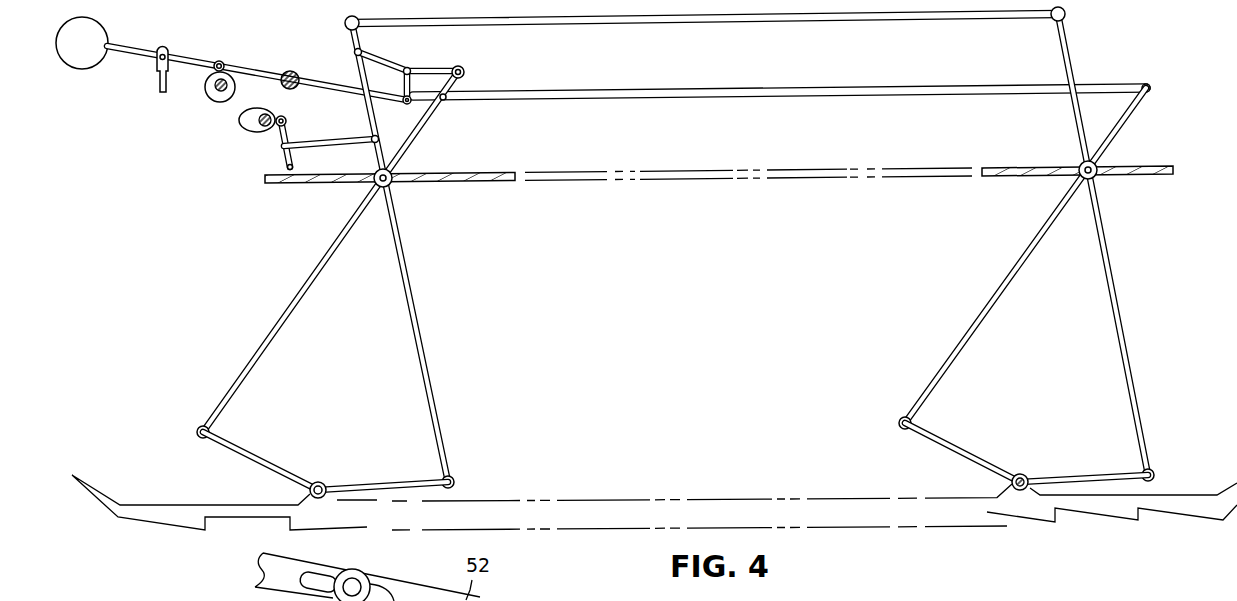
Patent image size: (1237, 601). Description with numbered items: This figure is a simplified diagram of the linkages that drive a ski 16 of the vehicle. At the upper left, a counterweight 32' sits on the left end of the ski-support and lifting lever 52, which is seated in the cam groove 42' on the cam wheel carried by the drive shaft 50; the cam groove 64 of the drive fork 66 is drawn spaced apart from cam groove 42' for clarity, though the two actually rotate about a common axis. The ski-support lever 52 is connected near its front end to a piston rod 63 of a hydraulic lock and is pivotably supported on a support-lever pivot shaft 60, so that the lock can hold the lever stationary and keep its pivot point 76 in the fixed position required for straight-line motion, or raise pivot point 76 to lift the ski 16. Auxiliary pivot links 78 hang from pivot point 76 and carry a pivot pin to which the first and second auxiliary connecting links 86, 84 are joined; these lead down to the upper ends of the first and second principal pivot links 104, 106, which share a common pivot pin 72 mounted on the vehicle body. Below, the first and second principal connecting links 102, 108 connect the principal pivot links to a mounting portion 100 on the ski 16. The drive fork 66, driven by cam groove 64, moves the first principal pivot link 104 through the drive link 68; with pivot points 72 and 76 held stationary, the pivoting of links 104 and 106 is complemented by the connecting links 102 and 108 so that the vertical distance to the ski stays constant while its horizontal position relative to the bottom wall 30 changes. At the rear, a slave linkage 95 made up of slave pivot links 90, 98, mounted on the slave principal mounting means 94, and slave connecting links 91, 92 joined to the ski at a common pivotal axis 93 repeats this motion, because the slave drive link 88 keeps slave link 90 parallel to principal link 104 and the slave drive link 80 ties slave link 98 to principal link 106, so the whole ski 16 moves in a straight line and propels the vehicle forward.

The ski 16 is at (172, 503).
The bottom wall 30 is at (495, 173).
The counterweight 32' is at (75, 62).
The cam groove 42' is at (169, 112).
The drive shaft 50 is at (213, 100).
The ski-support and lifting lever 52 is at (247, 68).
The support-lever pivot shaft 60 is at (291, 70).
The piston rod 63 is at (158, 86).
The cam groove 64 is at (245, 128).
The drive fork 66 is at (282, 152).
The drive link 68 is at (322, 141).
The pivot pin 72 is at (396, 188).
The pivot point 76 is at (403, 104).
The auxiliary pivot link 78 is at (404, 66).
The slave drive link 80 is at (650, 98).
The second auxiliary connecting link 84 is at (437, 66).
The first auxiliary connecting link 86 is at (366, 60).
The slave drive link 88 is at (620, 24).
The slave pivot link 90 is at (1107, 250).
The slave connecting link 91 is at (1069, 477).
The slave connecting link 92 is at (968, 453).
The common pivotal axis 93 is at (1024, 476).
The slave principal mounting means 94 is at (1097, 166).
The slave linkage 95 is at (1052, 412).
The slave pivot link 98 is at (1026, 251).
The mounting portion 100 is at (318, 480).
The first principal connecting link 102 is at (384, 483).
The first principal pivot link 104 is at (413, 296).
The second principal pivot link 106 is at (303, 292).
The second principal connecting link 108 is at (262, 458).